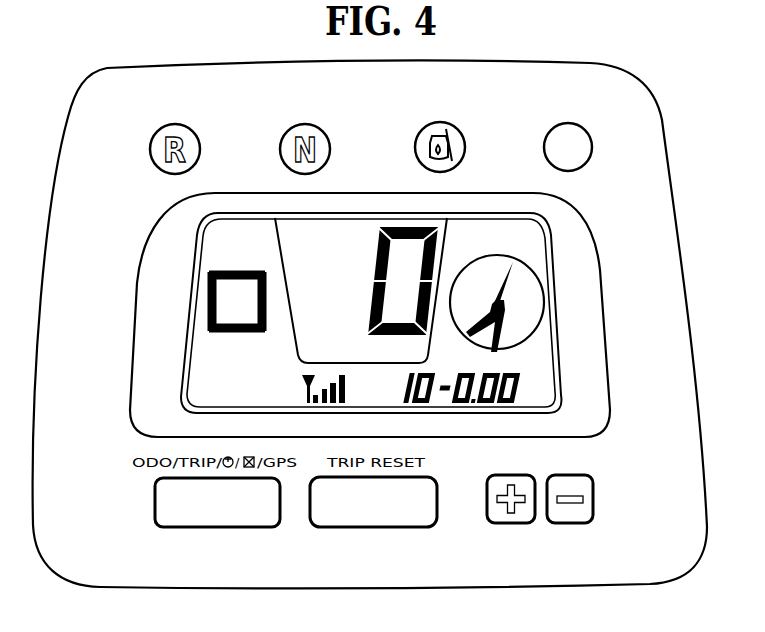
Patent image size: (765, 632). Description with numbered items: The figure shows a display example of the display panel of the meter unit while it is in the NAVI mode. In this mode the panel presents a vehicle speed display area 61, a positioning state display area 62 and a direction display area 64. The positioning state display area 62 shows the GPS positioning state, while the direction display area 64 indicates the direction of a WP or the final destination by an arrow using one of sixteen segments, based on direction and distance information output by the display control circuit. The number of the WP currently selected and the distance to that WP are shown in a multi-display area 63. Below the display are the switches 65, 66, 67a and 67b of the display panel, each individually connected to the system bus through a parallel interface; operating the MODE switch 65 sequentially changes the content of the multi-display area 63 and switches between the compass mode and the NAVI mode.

The vehicle speed display area 61 is at (363, 225).
The positioning state display area 62 is at (303, 373).
The multi-display area 63 is at (523, 395).
The direction display area 64 is at (543, 283).
The MODE switch 65 is at (263, 517).
The switch 66 is at (415, 517).
The switch 67a is at (497, 523).
The switch 67b is at (583, 523).